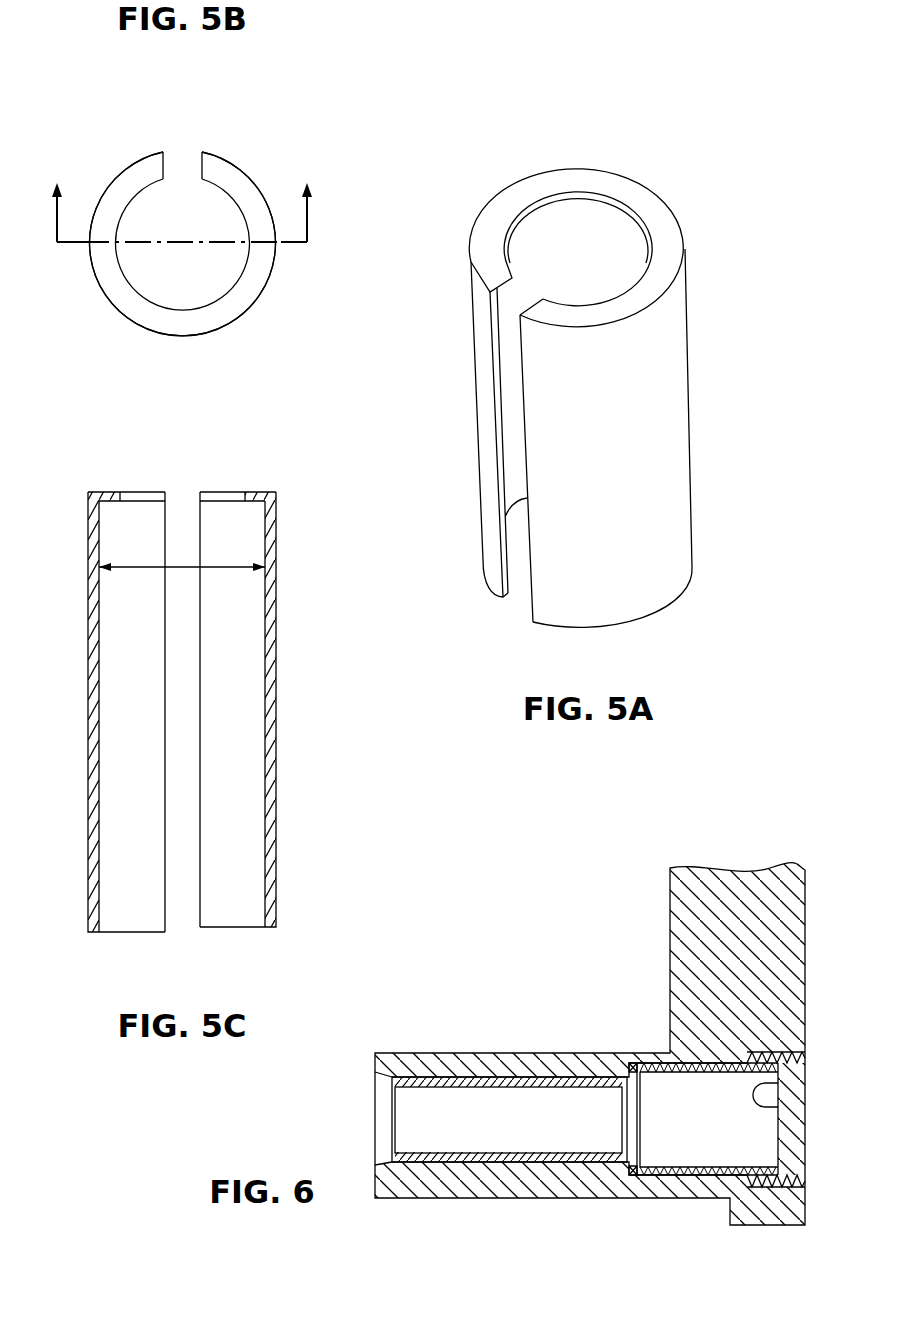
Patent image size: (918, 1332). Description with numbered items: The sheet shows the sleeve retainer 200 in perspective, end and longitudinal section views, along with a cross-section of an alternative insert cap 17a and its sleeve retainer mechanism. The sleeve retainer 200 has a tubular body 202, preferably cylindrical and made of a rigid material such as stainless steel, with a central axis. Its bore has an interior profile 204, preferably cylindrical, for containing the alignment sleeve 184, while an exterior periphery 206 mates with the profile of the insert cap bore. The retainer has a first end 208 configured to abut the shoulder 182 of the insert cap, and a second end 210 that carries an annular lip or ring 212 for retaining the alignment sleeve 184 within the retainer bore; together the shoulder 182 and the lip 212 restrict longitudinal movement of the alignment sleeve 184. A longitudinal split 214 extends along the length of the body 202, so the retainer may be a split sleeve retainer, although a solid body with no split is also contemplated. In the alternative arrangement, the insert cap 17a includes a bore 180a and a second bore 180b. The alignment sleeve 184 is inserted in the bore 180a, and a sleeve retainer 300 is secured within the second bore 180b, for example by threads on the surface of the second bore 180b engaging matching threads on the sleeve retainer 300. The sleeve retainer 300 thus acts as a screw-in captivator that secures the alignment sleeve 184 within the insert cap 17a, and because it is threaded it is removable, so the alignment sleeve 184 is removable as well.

In FIG. 5B, the sleeve retainer 200 is at (199, 194).
In FIG. 5A, the sleeve retainer 200 is at (612, 392).
In FIG. 5C, the sleeve retainer 200 is at (189, 701).
In FIG. 5B, the tubular body 202 is at (276, 260).
In FIG. 5A, the tubular body 202 is at (610, 438).
In FIG. 5C, the tubular body 202 is at (278, 698).
In FIG. 5B, the interior profile 204 is at (243, 268).
In FIG. 5A, the interior profile 204 is at (555, 218).
In FIG. 5C, the interior profile 204 is at (260, 645).
In FIG. 5B, the exterior periphery 206 is at (92, 273).
In FIG. 5A, the exterior periphery 206 is at (673, 500).
In FIG. 5C, the exterior periphery 206 is at (88, 750).
In FIG. 5A, the first end 208 is at (678, 597).
In FIG. 5C, the first end 208 is at (272, 932).
In FIG. 5A, the second end 210 is at (568, 225).
In FIG. 5C, the second end 210 is at (152, 480).
In FIG. 5B, the annular lip 212 is at (187, 206).
In FIG. 5A, the annular lip 212 is at (497, 218).
In FIG. 5C, the annular lip 212 is at (105, 492).
In FIG. 5B, the longitudinal split 214 is at (182, 135).
In FIG. 5A, the longitudinal split 214 is at (513, 614).
In FIG. 5C, the longitudinal split 214 is at (183, 948).
In FIG. 6, the insert cap 17a is at (561, 1047).
In FIG. 6, the sleeve retainer 300 is at (707, 1060).
In FIG. 6, the shoulder 182 is at (386, 1082).
In FIG. 6, the alignment sleeve 184 is at (485, 1087).
In FIG. 6, the bore 180a is at (509, 1154).
In FIG. 6, the second bore 180b is at (717, 1163).